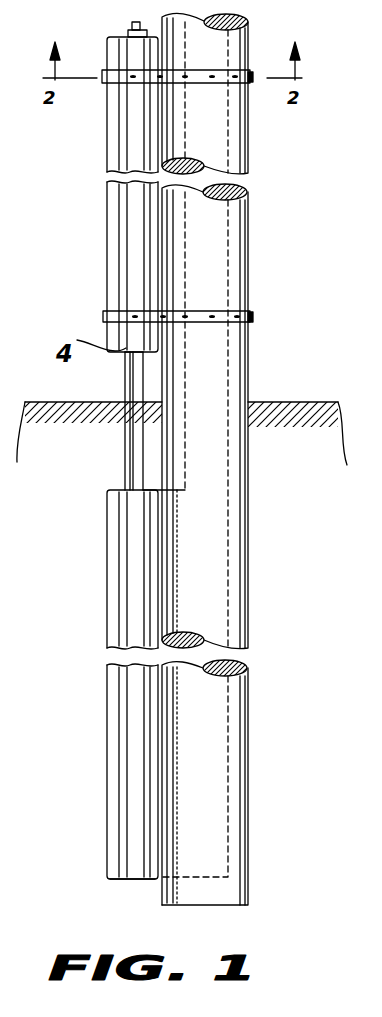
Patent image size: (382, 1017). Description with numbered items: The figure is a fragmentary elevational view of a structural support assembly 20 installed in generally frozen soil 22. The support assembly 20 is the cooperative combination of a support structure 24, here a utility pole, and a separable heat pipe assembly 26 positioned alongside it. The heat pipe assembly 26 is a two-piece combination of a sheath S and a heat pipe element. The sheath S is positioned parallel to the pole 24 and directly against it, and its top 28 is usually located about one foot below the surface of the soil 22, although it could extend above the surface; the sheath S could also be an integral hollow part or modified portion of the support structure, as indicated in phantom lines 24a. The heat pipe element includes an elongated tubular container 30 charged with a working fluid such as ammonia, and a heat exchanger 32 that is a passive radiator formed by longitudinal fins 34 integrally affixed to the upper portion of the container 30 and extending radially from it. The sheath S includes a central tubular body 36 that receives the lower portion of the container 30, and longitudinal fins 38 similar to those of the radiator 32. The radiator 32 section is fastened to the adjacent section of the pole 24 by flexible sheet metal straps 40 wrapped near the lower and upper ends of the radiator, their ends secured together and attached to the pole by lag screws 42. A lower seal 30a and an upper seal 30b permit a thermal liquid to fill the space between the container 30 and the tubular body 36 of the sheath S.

The structural support assembly 20 is at (268, 196).
The soil 22 is at (300, 402).
The support structure 24 is at (248, 270).
The phantom lines 24a is at (229, 590).
The heat pipe assembly 26 is at (91, 243).
The top of the sheath 28 is at (113, 490).
The tubular container 30 is at (126, 371).
The lower seal 30a is at (127, 355).
The upper seal 30b is at (126, 33).
The heat exchanger 32 is at (107, 145).
The longitudinal fins 34 is at (122, 262).
The central tubular body 36 is at (132, 880).
The longitudinal fins 38 is at (120, 765).
The sheet metal straps 40 is at (223, 90).
The lag screws 42 is at (251, 82).
The sheath S is at (107, 568).